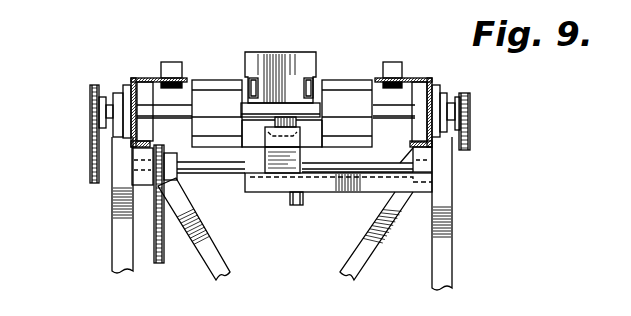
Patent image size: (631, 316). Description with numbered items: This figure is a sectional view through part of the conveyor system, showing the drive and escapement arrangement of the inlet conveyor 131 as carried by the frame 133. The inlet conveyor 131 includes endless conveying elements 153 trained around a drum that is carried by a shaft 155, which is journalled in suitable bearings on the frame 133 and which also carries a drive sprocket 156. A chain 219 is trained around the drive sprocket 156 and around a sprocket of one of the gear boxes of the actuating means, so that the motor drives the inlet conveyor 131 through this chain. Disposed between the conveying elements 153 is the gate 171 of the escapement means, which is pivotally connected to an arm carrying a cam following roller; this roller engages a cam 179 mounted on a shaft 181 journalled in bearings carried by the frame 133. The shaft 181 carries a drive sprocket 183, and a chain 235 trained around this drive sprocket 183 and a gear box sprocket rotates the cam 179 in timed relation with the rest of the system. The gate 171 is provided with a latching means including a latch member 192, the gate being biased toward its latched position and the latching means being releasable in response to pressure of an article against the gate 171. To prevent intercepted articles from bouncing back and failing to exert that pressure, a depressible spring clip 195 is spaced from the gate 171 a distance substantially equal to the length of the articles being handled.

The inlet conveyor 131 is at (230, 64).
The frame 133 is at (112, 206).
The endless conveying elements 153 is at (203, 80).
The shaft 155 is at (137, 62).
The drive sprocket 156 is at (100, 112).
The gate 171 is at (281, 53).
The cam 179 is at (298, 206).
The shaft 181 is at (238, 177).
The drive sprocket 183 is at (178, 173).
The latch member 192 is at (300, 134).
The spring clip 195 is at (170, 62).
The chain 219 is at (90, 157).
The chain 235 is at (164, 250).